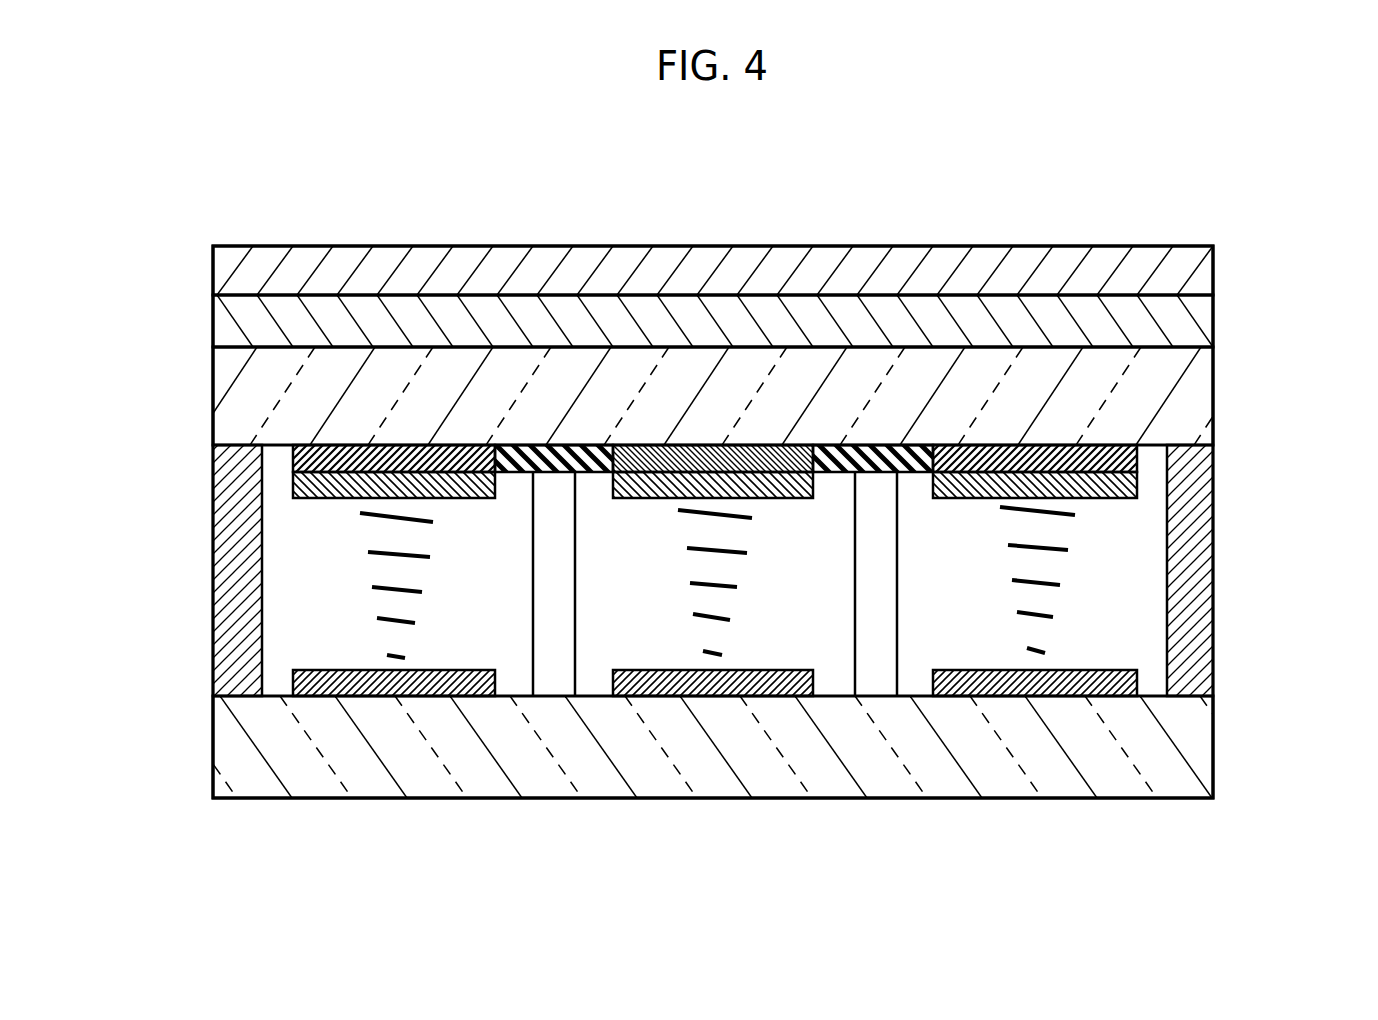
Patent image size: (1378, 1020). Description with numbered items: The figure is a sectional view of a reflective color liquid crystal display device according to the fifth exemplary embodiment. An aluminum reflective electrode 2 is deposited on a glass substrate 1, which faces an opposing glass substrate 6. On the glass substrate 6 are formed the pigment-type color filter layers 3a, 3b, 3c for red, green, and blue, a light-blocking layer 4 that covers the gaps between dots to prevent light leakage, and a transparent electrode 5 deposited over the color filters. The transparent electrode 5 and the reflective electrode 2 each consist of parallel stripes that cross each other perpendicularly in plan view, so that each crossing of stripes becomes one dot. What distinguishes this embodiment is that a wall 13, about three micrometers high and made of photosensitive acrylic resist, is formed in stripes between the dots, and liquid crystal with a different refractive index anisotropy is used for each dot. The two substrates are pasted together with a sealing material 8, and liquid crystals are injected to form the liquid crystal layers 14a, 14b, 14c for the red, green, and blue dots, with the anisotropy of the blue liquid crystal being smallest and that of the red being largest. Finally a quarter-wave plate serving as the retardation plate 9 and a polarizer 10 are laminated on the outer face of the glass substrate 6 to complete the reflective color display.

The glass substrate 1 is at (1189, 754).
The reflective electrode 2 is at (1139, 680).
The color filter layer 3a is at (343, 447).
The color filter layer 3b is at (643, 447).
The color filter layer 3c is at (997, 445).
The light-blocking layer 4 is at (870, 447).
The transparent electrode 5 is at (1135, 480).
The glass substrate 6 is at (1196, 400).
The sealing material 8 is at (237, 587).
The retardation plate 9 is at (1199, 319).
The polarizer 10 is at (1214, 266).
The wall 13 is at (551, 684).
The liquid crystal layer 14a is at (347, 630).
The liquid crystal layer 14b is at (668, 614).
The liquid crystal layer 14c is at (995, 600).